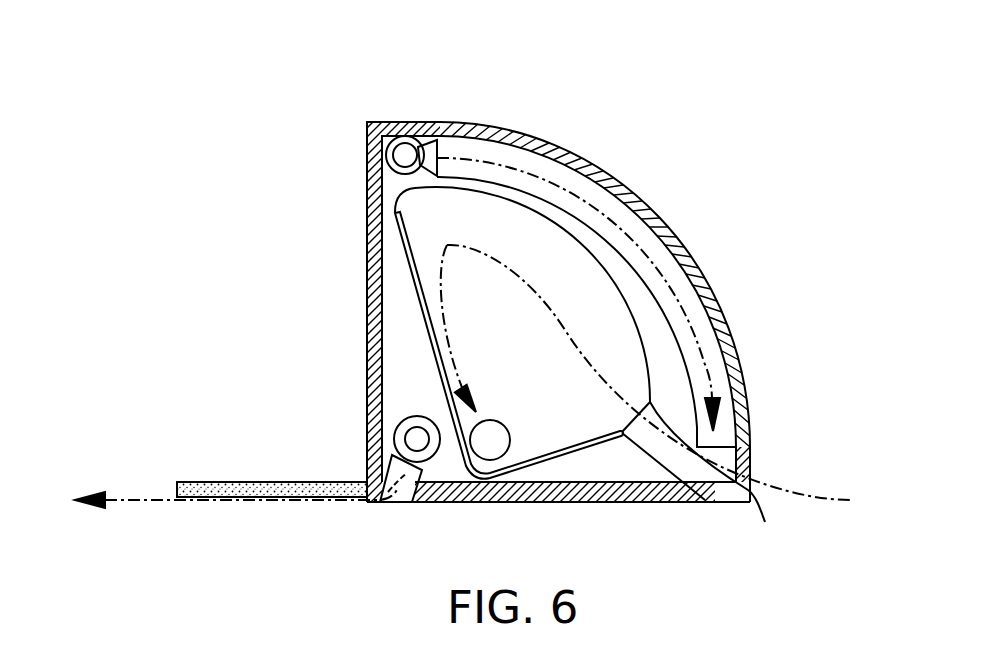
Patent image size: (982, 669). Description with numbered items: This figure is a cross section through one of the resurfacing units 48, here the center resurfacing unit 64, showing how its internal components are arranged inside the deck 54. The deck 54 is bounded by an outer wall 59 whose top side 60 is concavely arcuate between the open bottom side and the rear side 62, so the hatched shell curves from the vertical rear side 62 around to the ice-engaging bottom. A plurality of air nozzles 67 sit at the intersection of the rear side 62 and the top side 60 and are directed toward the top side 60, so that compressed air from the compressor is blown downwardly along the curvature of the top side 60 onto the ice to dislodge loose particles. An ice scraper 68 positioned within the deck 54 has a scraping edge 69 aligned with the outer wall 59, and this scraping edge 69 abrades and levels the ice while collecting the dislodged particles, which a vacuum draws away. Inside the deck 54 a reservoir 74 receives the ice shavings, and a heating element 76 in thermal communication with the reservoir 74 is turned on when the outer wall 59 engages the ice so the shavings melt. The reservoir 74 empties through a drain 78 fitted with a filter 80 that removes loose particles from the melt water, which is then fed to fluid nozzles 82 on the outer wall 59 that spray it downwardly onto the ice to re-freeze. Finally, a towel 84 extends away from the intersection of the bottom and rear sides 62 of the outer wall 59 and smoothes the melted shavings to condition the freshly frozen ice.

The resurfacing unit 48 is at (292, 213).
The deck 54 is at (367, 122).
The outer wall 59 is at (484, 122).
The top side 60 is at (635, 197).
The rear side 62 is at (367, 268).
The center resurfacing unit 64 is at (632, 503).
The air nozzle 67 is at (403, 135).
The ice scraper 68 is at (700, 365).
The scraping edge 69 is at (752, 505).
The reservoir 74 is at (623, 297).
The heating element 76 is at (418, 302).
The drain 78 is at (412, 416).
The filter 80 is at (465, 468).
The fluid nozzle 82 is at (380, 412).
The towel 84 is at (197, 482).